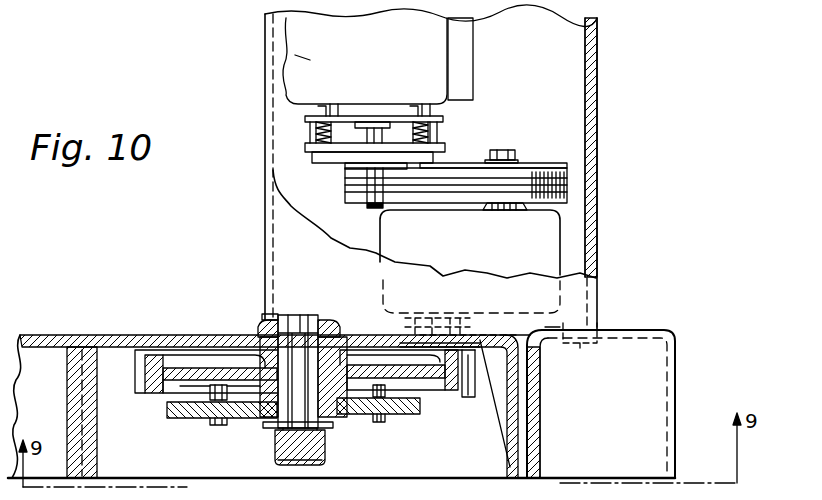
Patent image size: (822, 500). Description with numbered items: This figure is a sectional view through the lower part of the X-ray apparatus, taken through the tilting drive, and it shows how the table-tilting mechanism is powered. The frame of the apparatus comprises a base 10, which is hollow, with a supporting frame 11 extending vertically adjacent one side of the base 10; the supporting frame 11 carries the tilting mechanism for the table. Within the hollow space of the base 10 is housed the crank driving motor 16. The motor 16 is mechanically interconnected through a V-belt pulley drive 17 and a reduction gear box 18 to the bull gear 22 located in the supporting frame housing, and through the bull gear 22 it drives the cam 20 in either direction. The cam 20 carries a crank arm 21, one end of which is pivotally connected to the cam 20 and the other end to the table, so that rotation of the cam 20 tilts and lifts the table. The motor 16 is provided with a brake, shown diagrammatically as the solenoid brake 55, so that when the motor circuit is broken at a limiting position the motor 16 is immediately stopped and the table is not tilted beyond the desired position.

The base 10 is at (598, 166).
The supporting frame 11 is at (677, 342).
The crank driving motor 16 is at (449, 76).
The V-belt pulley drive 17 is at (530, 165).
The reduction gear box 18 is at (560, 241).
The cam 20 is at (402, 414).
The crank arm 21 is at (326, 457).
The bull gear 22 is at (154, 397).
The solenoid brake 55 is at (438, 133).